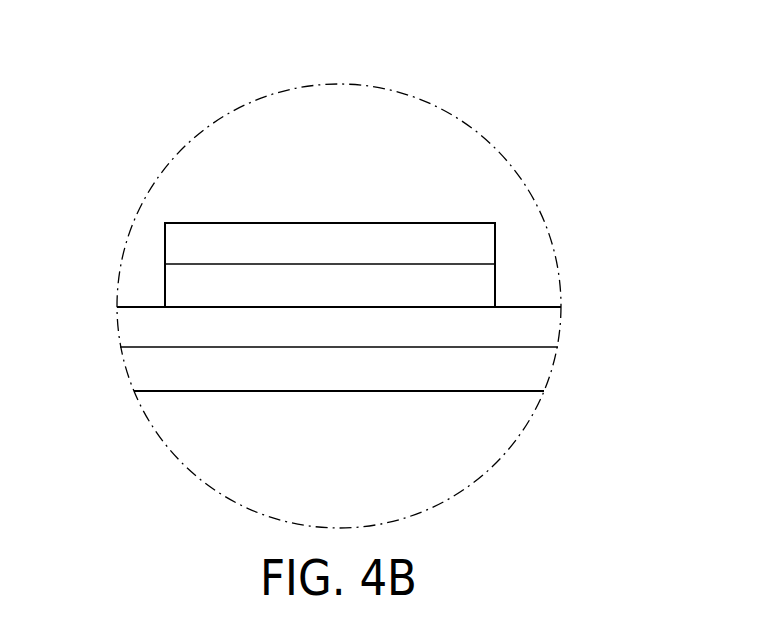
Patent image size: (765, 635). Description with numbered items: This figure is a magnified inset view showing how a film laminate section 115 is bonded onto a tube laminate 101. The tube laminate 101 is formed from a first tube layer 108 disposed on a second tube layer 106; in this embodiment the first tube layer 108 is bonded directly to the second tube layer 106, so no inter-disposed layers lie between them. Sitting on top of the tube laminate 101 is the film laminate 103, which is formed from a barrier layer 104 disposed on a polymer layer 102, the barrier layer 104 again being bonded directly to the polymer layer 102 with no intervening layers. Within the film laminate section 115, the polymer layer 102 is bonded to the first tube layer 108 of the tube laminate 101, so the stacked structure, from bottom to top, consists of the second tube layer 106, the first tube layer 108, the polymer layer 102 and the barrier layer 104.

The tube laminate 101 is at (248, 418).
The polymer layer 102 is at (188, 289).
The film laminate 103 is at (500, 223).
The barrier layer 104 is at (207, 242).
The second tube layer 106 is at (434, 375).
The first tube layer 108 is at (530, 327).
The film laminate section 115 is at (310, 196).